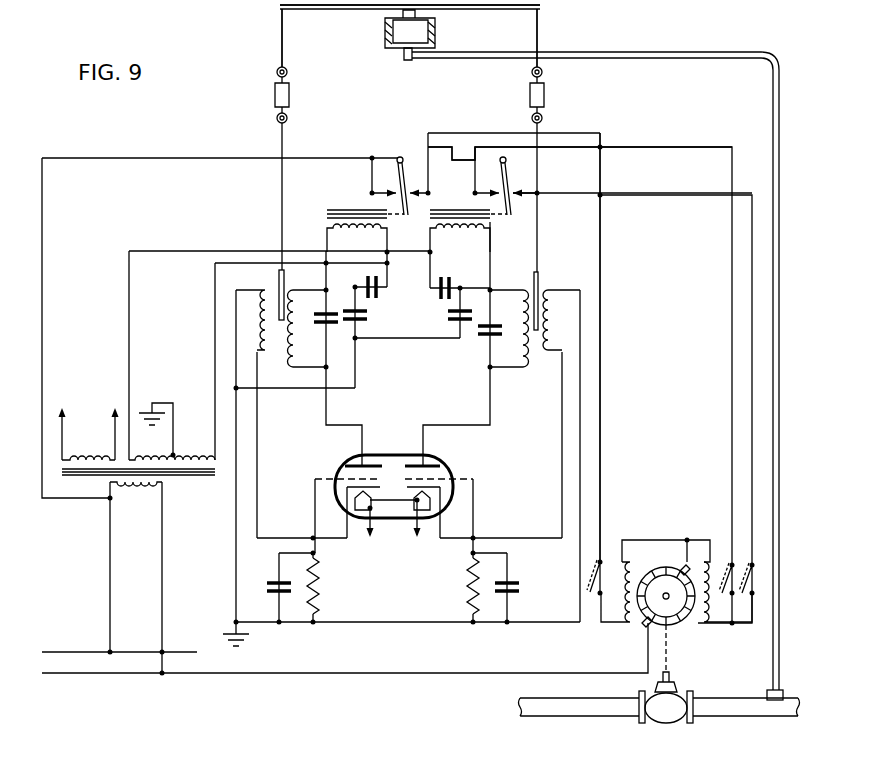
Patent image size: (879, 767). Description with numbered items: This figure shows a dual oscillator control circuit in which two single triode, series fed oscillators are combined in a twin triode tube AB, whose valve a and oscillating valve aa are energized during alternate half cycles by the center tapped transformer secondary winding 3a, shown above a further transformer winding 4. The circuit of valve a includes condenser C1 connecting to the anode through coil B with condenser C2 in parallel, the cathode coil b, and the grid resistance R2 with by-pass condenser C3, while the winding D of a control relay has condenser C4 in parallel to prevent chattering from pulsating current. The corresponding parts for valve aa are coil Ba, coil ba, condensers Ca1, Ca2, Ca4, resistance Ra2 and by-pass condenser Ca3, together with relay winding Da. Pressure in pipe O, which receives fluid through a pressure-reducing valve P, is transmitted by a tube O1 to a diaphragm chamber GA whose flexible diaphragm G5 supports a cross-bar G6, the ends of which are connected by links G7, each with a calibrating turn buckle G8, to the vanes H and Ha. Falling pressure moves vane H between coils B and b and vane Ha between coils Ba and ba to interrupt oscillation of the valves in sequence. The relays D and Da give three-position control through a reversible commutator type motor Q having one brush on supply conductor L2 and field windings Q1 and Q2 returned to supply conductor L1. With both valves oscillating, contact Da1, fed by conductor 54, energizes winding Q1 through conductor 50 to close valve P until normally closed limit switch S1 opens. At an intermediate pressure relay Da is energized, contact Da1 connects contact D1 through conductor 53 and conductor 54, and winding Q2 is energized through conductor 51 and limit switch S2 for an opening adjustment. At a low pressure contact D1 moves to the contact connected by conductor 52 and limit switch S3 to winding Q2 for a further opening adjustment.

The links G7 is at (282, 43).
The cross-bar G6 is at (380, 12).
The flexible diaphragm G5 is at (402, 40).
The pressure responsive device GA is at (436, 35).
The turn buckle G8 is at (275, 95).
The relay contact Da1 is at (408, 162).
The conductor 53 is at (476, 160).
The relay contact D1 is at (519, 175).
The relay winding Da is at (330, 226).
The winding of control relay D is at (483, 226).
The coil Ba is at (266, 292).
The vane Ha is at (284, 272).
The coil ba is at (298, 364).
The condenser Ca4 is at (380, 280).
The condenser Ca1 is at (362, 321).
The condenser Ca2 is at (336, 323).
The condenser C4 is at (442, 298).
The condenser C1 is at (455, 323).
The condenser C2 is at (485, 332).
The coil B is at (516, 340).
The vane H is at (538, 285).
The coil b is at (550, 320).
The conductor 54 is at (42, 276).
The conductor 50 is at (600, 292).
The conductor 52 is at (732, 313).
The conductor 51 is at (752, 345).
The transformer secondary winding 3a is at (200, 456).
The transformer secondary winding 4 is at (93, 478).
The twin triode tube AB is at (408, 456).
The oscillating valve aa is at (345, 463).
The valve a is at (440, 468).
The condenser Ca3 is at (280, 580).
The resistance Ra2 is at (318, 582).
The resistance R2 is at (470, 578).
The by-pass condenser C3 is at (510, 580).
The supply conductor L1 is at (82, 650).
The supply conductor L2 is at (82, 676).
The limit switch S1 is at (600, 563).
The field winding Q1 is at (630, 620).
The field winding Q2 is at (688, 540).
The reversible relay motor Q is at (666, 627).
The limit switch S3 is at (733, 565).
The limit switch S2 is at (753, 596).
The tube O1 is at (773, 680).
The pressure-reducing valve P is at (671, 723).
The pipe O is at (745, 718).